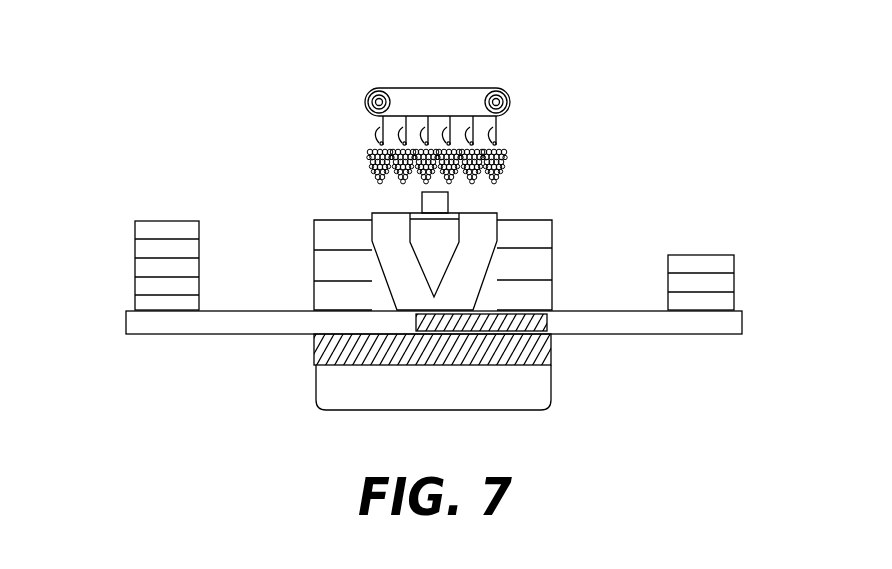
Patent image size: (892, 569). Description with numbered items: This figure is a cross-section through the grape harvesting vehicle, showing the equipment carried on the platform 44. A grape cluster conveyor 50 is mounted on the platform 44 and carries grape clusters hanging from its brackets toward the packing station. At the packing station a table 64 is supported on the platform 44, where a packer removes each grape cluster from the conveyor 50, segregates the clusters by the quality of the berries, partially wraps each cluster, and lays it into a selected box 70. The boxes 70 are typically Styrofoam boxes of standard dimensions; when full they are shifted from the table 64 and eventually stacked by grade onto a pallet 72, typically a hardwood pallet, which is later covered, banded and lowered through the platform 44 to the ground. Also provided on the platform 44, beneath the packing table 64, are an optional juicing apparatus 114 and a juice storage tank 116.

The conveyor 50 is at (410, 87).
The table 64 is at (542, 228).
The box 70 is at (137, 250).
The pallet 72 is at (730, 282).
The platform 44 is at (137, 325).
The juicing apparatus 114 is at (542, 348).
The juice storage tank 116 is at (542, 387).